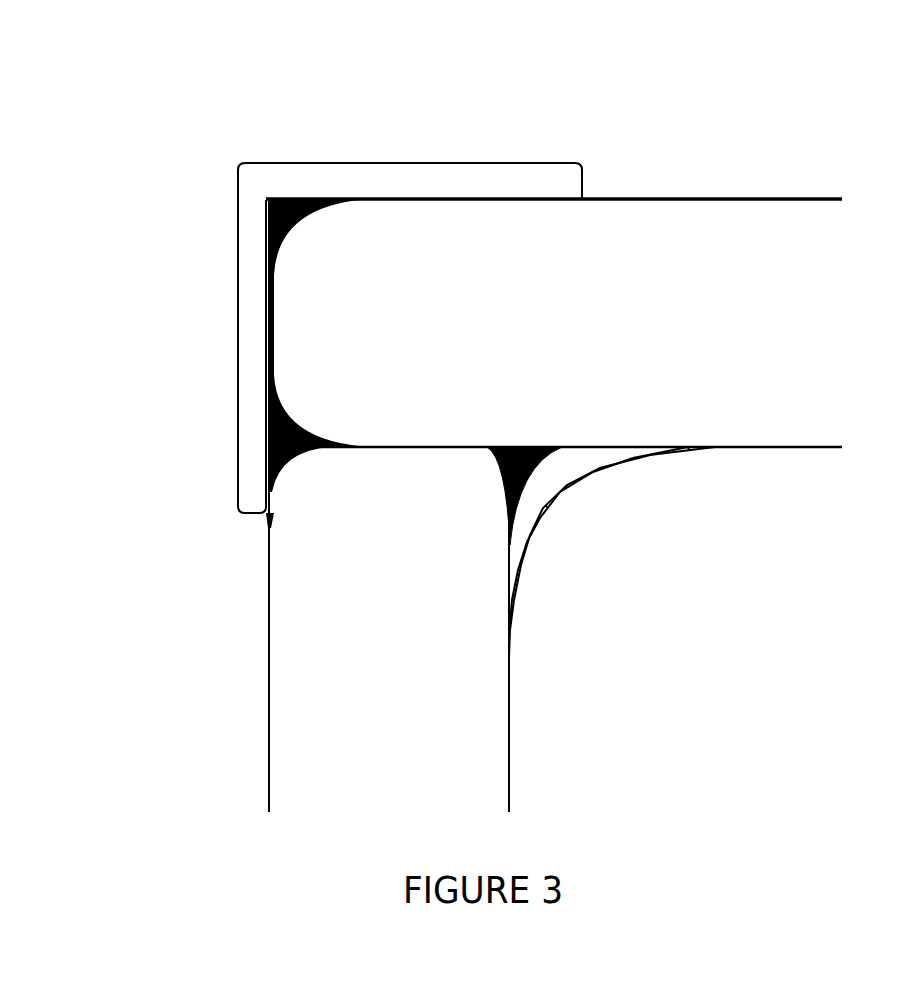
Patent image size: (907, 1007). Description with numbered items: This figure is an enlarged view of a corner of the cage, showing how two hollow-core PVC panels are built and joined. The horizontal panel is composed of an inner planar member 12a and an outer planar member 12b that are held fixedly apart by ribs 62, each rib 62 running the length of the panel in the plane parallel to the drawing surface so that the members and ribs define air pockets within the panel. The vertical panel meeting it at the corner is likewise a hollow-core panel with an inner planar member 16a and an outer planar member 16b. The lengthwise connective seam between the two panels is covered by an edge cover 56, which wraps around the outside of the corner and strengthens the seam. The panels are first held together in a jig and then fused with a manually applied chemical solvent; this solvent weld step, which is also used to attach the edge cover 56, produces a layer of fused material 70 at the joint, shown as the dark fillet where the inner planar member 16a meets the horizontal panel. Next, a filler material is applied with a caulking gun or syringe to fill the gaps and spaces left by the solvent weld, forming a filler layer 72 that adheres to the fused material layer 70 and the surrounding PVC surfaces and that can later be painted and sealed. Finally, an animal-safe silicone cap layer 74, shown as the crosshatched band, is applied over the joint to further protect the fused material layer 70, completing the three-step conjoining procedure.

The inner planar member 12a is at (770, 447).
The outer planar member 12b is at (672, 200).
The inner planar member of panel 16 16a is at (508, 675).
The outer planar member of panel 16 16b is at (269, 548).
The edge cover 56 is at (235, 408).
The rib 62 is at (410, 303).
The fused material layer 70 is at (500, 460).
The filler layer 72 is at (508, 577).
The silicone cap layer 74 is at (577, 495).